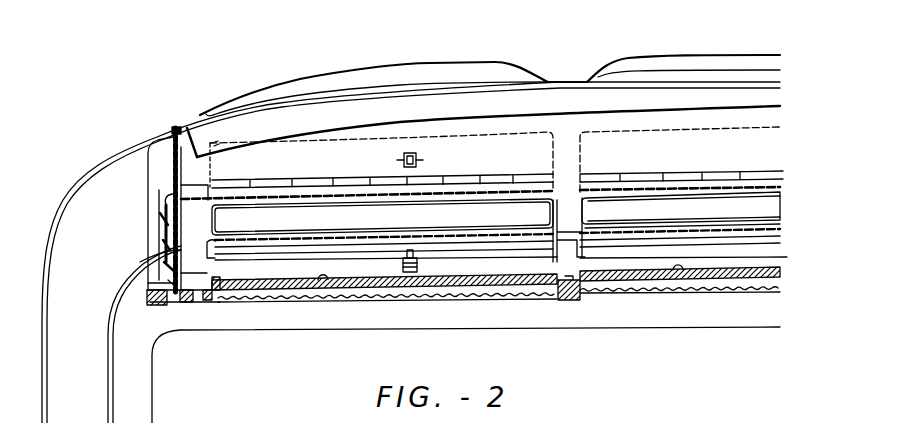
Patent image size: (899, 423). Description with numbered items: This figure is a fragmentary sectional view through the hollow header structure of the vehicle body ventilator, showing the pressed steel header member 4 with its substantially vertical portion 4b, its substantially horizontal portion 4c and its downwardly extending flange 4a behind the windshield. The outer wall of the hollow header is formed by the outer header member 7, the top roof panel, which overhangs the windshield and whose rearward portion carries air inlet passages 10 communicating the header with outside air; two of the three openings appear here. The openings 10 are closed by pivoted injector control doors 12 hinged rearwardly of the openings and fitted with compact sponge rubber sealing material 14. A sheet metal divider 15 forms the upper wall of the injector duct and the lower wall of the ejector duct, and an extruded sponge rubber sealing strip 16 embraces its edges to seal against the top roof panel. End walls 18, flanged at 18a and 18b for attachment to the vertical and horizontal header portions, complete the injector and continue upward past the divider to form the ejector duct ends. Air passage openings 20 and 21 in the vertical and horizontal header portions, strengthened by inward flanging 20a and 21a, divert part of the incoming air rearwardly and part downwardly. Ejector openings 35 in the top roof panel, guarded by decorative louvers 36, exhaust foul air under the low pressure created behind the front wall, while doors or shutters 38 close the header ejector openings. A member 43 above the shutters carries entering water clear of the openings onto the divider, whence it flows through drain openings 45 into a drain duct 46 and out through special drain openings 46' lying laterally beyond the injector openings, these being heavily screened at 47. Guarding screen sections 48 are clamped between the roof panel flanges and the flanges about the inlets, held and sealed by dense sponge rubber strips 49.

The header member 4 is at (495, 157).
The downwardly extending flange 4a is at (493, 324).
The substantially vertical portion 4b is at (480, 212).
The substantially horizontal portion 4c is at (204, 269).
The outer header member 7 is at (557, 80).
The air inlet passages 10 is at (343, 297).
The injector control doors 12 is at (310, 280).
The sealing material 14 is at (273, 289).
The divider 15 is at (307, 190).
The sealing strip 16 is at (172, 128).
The end walls 18 is at (153, 149).
The flange 18a is at (153, 168).
The flange 18b is at (167, 258).
The air passage openings 20 is at (496, 213).
The inward flanging 20a is at (551, 214).
The air passage openings 21 is at (336, 252).
The inward flanging 21a is at (293, 253).
The ejector openings 35 is at (440, 76).
The decorative louvers 36 is at (357, 70).
The doors or shutters 38 is at (561, 156).
The member 43 is at (483, 126).
The drain openings 45 is at (184, 192).
The drain duct 46 is at (139, 233).
The drain openings 46' is at (132, 276).
The screen 47 is at (177, 304).
The guarding screen sections 48 is at (428, 297).
The sponge rubber strips 49 is at (204, 300).